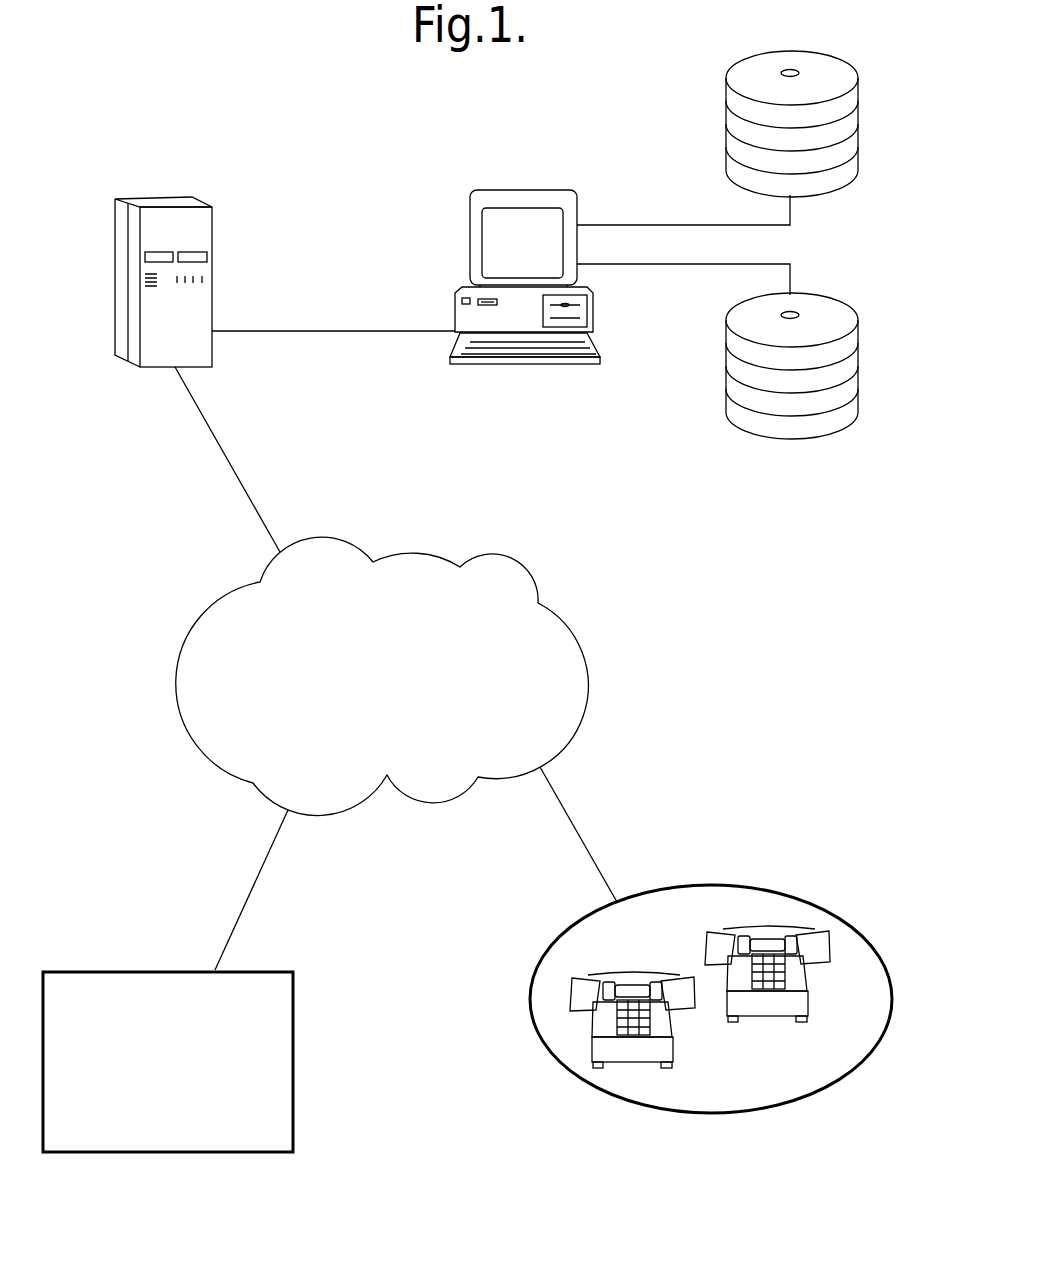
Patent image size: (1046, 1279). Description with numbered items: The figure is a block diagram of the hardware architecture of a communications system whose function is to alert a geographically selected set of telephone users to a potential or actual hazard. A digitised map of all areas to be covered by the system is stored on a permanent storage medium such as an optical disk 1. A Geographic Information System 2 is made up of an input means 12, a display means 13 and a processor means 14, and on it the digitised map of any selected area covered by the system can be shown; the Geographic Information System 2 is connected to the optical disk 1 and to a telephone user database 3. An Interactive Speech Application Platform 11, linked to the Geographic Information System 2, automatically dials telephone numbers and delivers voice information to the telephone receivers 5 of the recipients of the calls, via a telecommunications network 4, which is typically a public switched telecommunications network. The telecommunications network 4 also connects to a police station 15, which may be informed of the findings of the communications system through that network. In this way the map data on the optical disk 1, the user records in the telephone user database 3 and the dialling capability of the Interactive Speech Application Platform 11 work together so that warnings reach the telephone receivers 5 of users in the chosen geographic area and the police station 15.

The optical disk 1 is at (793, 440).
The Geographic Information System 2 is at (515, 285).
The telephone user database 3 is at (797, 50).
The telecommunications network 4 is at (175, 672).
The telephone receivers 5 is at (610, 1098).
The Interactive Speech Application Platform 11 is at (115, 267).
The input means 12 is at (545, 365).
The display means 13 is at (490, 240).
The processor means 14 is at (455, 320).
The police station 15 is at (122, 970).